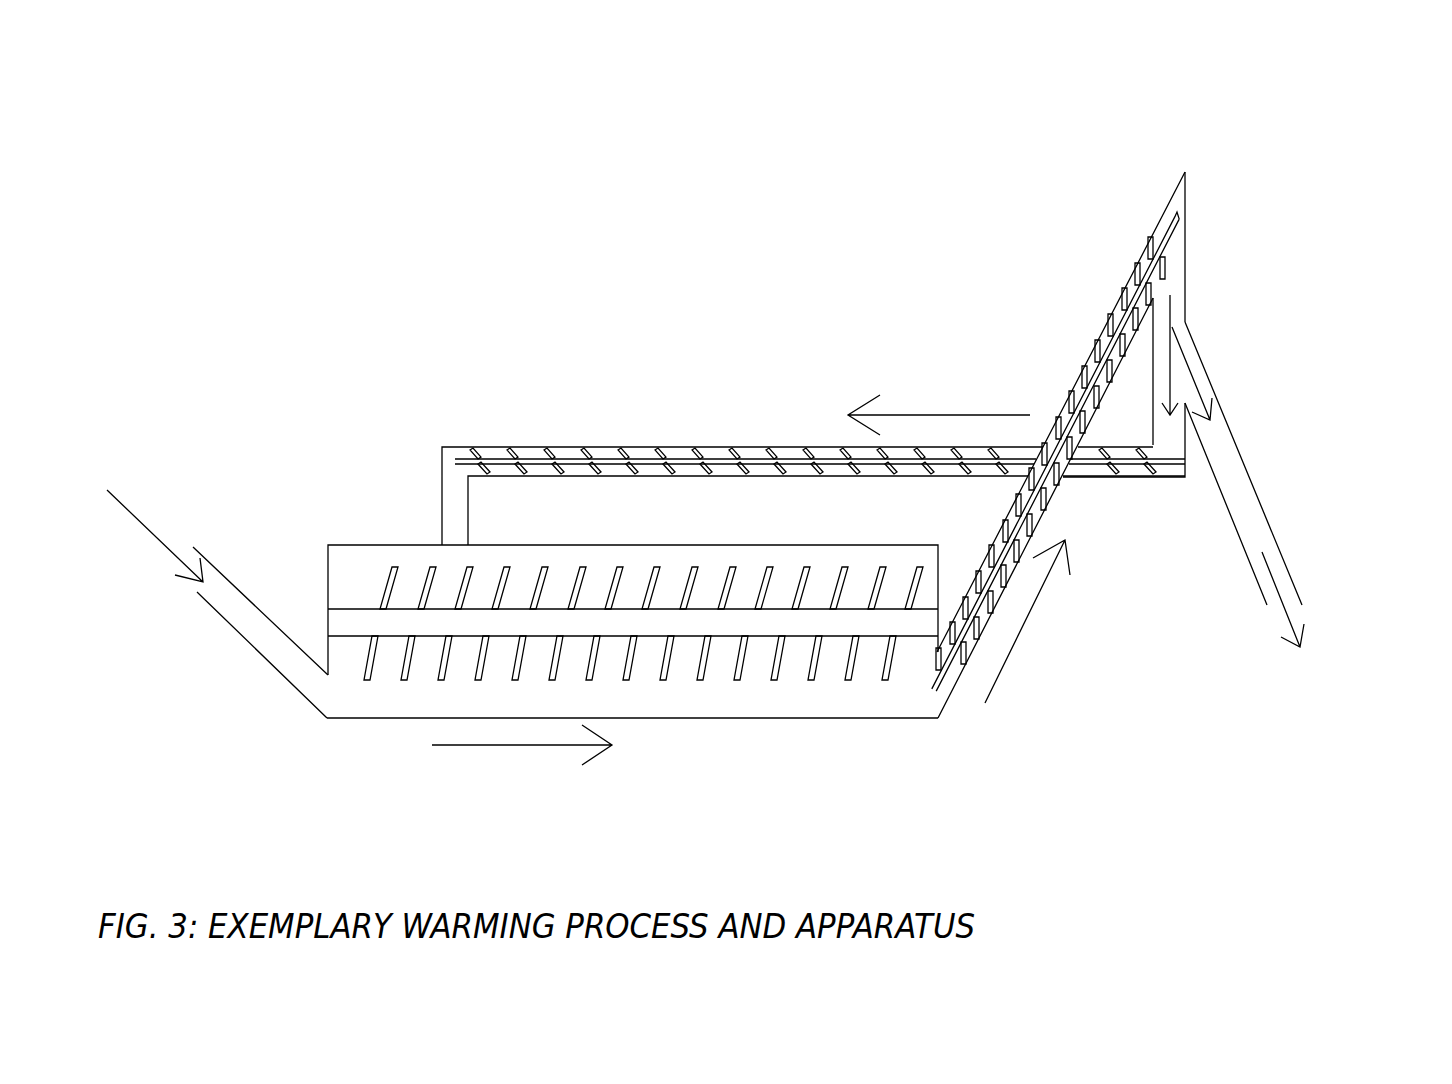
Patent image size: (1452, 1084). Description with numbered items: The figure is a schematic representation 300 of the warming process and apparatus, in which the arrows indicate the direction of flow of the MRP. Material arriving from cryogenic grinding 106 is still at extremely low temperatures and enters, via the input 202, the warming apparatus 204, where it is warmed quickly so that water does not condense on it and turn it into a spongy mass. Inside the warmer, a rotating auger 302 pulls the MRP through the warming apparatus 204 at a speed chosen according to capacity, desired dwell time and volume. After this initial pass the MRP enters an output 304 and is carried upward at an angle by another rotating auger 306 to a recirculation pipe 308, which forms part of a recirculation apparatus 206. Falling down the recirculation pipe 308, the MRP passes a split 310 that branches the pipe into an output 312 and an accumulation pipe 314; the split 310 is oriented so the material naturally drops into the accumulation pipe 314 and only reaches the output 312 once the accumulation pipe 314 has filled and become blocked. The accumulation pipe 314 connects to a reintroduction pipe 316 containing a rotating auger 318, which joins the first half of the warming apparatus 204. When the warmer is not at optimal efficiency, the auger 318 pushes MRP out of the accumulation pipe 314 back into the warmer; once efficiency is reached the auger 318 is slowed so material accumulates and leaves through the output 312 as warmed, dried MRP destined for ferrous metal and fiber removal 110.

The cryogenic grinding 106 is at (168, 494).
The warmed, dried MRP to ferrous metal and fiber removal 110 is at (1318, 816).
The input 202 is at (233, 630).
The warming apparatus 204 is at (738, 718).
The recirculation apparatus 206 is at (935, 307).
The schematic representation 300 is at (1258, 122).
The rotating auger 302 is at (830, 680).
The output 304 is at (1063, 492).
The rotating auger 306 is at (1110, 333).
The recirculation pipe 308 is at (1188, 240).
The split 310 is at (1195, 310).
The output 312 is at (1252, 480).
The accumulation pipe 314 is at (1185, 480).
The reintroduction pipe 316 is at (765, 442).
The rotating auger 318 is at (647, 450).